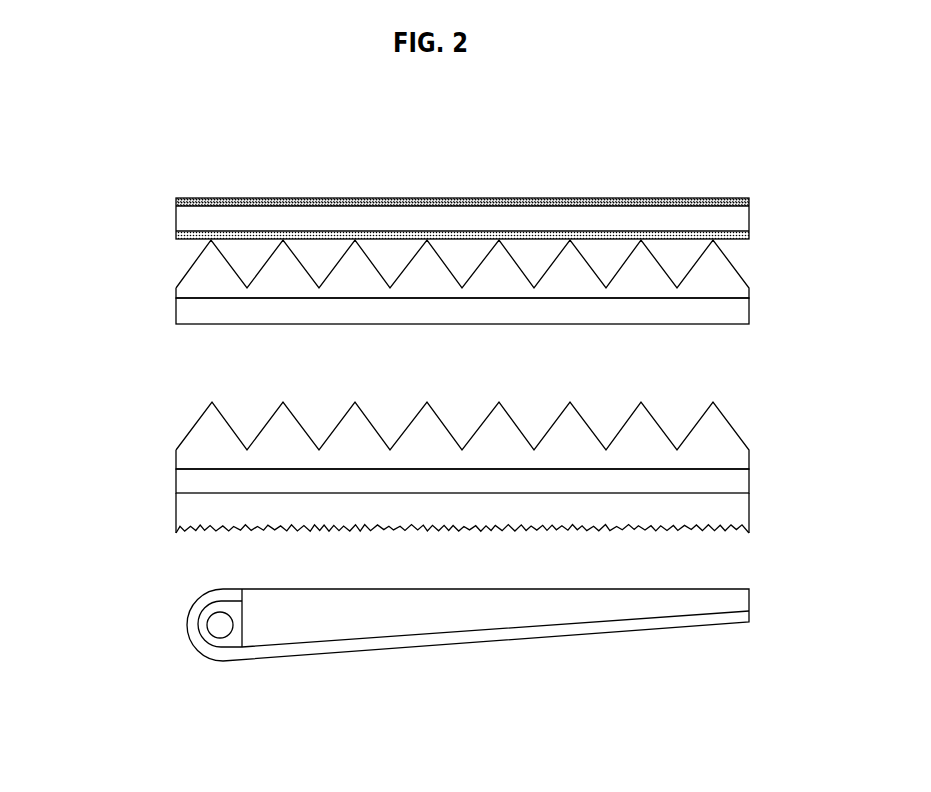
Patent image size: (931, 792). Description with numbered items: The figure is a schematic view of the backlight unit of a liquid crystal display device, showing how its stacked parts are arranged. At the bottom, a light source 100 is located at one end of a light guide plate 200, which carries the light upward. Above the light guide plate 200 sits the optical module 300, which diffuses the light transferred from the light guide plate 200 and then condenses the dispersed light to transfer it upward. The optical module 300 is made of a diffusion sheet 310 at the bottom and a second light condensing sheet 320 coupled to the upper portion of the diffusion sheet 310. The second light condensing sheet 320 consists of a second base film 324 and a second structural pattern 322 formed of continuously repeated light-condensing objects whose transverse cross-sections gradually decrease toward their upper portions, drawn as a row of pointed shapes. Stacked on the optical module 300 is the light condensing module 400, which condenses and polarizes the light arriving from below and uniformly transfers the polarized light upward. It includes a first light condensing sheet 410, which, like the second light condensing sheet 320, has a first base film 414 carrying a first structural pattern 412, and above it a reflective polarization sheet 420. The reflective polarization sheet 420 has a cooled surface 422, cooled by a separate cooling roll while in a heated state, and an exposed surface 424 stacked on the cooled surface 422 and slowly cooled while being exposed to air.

The light source 100 is at (217, 622).
The light guide plate 200 is at (310, 630).
The optical module 300 is at (92, 437).
The diffusion sheet 310 is at (185, 511).
The second light condensing sheet 320 is at (166, 439).
The second structural pattern 322 is at (720, 450).
The second base film 324 is at (733, 481).
The light condensing module 400 is at (92, 212).
The first light condensing sheet 410 is at (166, 291).
The first structural pattern 412 is at (720, 282).
The first base film 414 is at (733, 312).
The reflective polarization sheet 420 is at (166, 219).
The cooled surface 422 is at (740, 240).
The exposed surface 424 is at (723, 202).